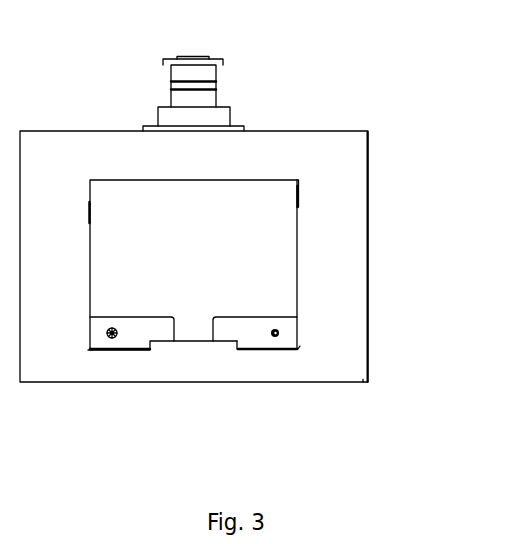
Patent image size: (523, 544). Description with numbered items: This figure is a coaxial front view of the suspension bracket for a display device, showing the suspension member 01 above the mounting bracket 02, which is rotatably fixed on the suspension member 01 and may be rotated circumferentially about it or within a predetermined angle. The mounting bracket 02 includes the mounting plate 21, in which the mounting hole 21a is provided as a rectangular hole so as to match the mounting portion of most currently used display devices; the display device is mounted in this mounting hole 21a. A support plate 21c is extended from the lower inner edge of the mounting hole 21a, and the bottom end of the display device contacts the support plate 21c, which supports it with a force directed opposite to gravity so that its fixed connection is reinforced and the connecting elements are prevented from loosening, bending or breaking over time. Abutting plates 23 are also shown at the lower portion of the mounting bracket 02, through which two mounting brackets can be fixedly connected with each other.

The suspension member 01 is at (221, 61).
The mounting bracket 02 is at (361, 124).
The mounting plate 21 is at (321, 230).
The mounting hole 21a is at (143, 225).
The support plate 21c is at (187, 339).
The abutting plate 23 is at (140, 333).